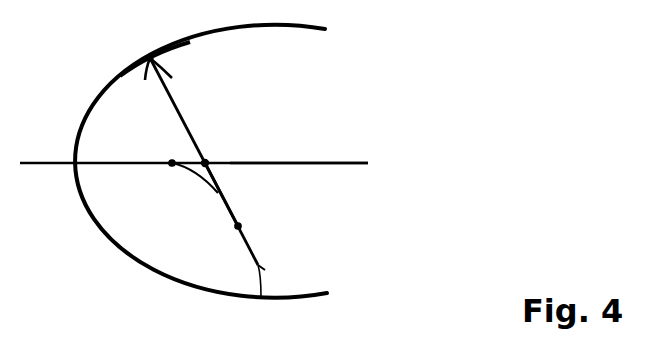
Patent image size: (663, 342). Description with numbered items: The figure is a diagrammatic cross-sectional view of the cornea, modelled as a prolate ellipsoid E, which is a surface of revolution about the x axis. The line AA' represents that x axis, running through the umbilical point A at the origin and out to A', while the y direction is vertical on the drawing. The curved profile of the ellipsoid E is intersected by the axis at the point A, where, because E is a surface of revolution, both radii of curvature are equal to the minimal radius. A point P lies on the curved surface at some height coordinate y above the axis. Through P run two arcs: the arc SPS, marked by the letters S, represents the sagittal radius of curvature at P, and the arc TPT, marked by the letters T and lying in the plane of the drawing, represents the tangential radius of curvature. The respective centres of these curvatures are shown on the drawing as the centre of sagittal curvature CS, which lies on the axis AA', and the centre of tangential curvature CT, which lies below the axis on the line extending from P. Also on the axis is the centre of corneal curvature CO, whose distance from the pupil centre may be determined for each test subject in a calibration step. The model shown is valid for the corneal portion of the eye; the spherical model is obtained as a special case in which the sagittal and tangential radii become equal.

The umbilical point A is at (194, 146).
The end point of axis line AA' A' is at (299, 147).
The point on the ellipsoid surface P is at (143, 39).
The tangential curvature arc endpoint T is at (147, 41).
The sagittal curvature arc endpoint S is at (166, 83).
The centre of corneal curvature CO is at (182, 154).
The centre of sagittal curvature CS is at (197, 142).
The centre of tangential curvature CT is at (246, 214).
The ellipsoid E is at (245, 280).